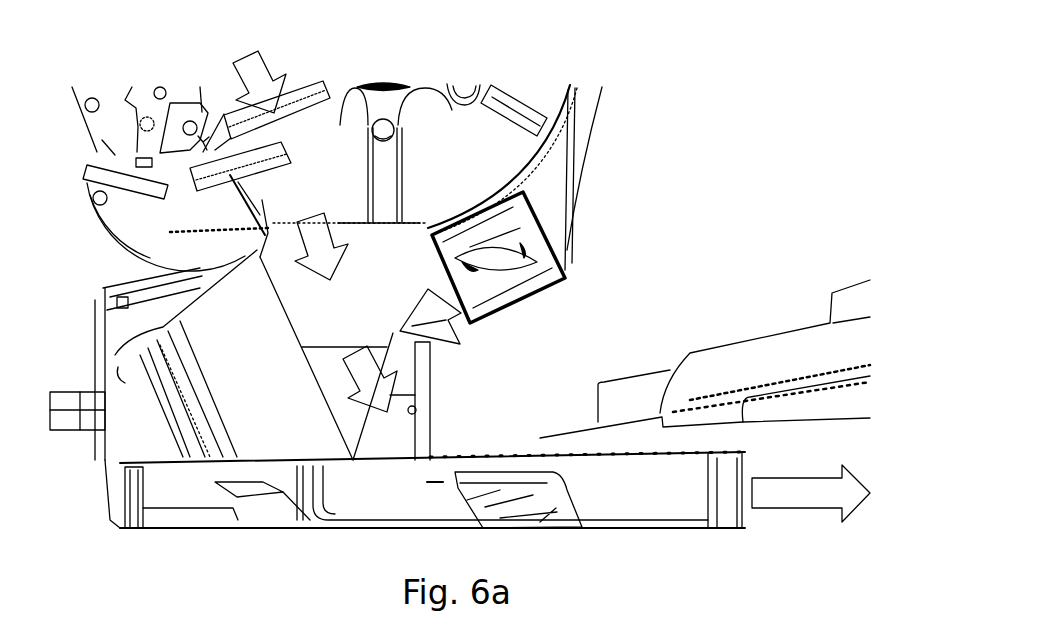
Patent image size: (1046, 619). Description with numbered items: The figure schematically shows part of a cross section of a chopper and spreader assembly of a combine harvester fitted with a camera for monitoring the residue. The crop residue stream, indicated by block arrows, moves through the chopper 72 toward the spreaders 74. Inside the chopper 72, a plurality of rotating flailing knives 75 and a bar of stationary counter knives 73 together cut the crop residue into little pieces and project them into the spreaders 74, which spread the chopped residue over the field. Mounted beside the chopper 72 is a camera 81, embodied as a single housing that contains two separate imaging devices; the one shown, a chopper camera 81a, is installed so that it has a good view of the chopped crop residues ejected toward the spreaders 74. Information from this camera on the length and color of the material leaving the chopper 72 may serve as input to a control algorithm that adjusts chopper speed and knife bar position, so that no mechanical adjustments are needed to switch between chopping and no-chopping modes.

The chopper 72 is at (540, 95).
The bar of stationary counter knives 73 is at (293, 170).
The spreaders 74 is at (353, 517).
The rotating flailing knives 75 is at (500, 133).
The camera 81 is at (557, 266).
The chopper camera 81a is at (443, 242).